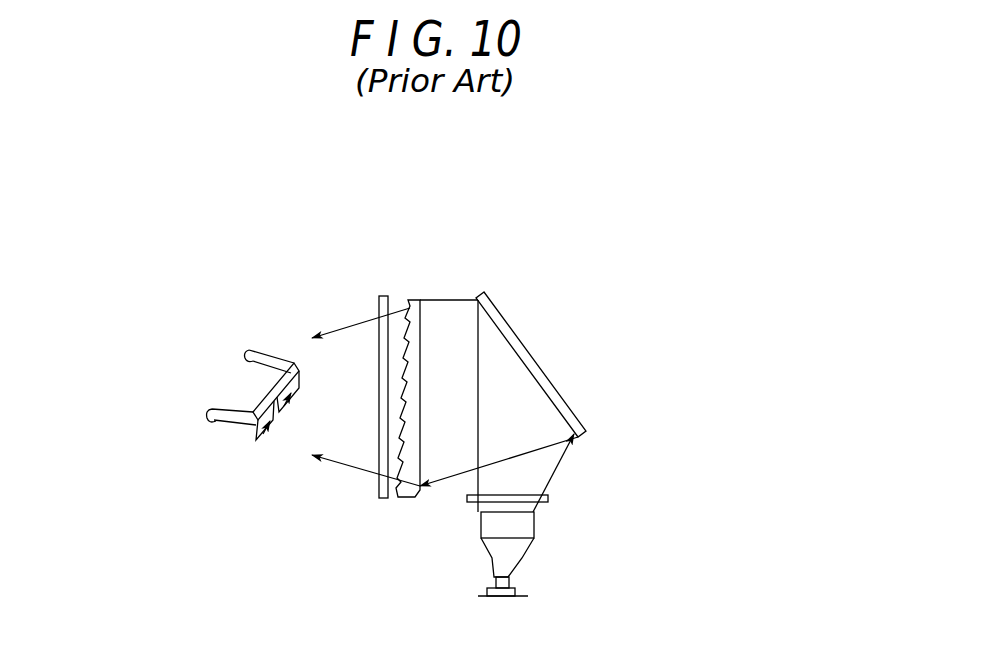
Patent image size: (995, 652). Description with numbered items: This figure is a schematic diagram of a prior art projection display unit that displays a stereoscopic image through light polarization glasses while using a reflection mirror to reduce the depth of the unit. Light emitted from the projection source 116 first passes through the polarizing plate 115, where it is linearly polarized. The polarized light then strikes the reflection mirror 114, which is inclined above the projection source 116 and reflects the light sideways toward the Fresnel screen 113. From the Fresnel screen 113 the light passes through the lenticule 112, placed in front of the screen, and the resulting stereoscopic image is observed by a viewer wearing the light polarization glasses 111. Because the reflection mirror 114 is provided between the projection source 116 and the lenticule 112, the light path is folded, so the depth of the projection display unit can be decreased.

The light polarization glasses 111 is at (228, 366).
The lenticule 112 is at (383, 295).
The Fresnel screen 113 is at (414, 298).
The reflection mirror 114 is at (487, 303).
The polarizing plate 115 is at (548, 499).
The projection source 116 is at (517, 548).